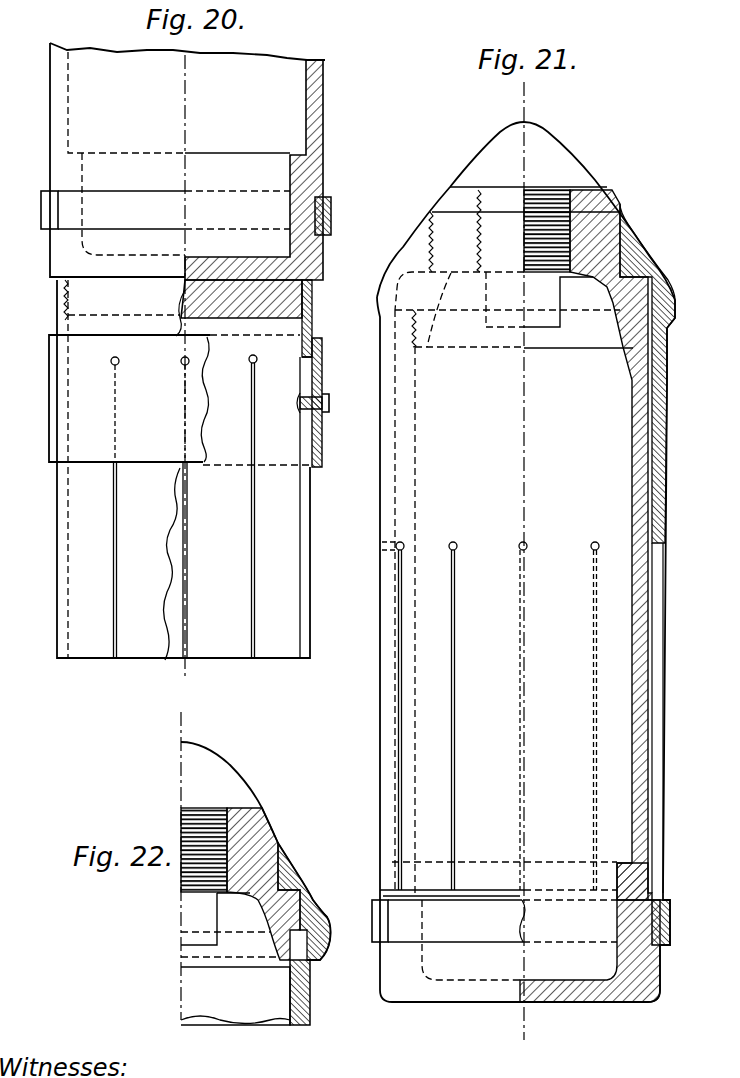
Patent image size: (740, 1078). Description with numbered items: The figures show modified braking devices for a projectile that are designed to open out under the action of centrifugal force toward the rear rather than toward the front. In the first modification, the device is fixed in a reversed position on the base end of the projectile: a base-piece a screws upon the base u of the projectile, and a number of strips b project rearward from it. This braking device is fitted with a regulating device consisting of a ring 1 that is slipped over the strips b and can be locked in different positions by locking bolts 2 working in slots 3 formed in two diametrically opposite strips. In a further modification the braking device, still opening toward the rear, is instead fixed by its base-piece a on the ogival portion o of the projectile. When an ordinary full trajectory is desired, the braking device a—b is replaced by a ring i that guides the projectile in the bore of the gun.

In FIG. 20, the base-piece a is at (82, 295).
In FIG. 21, the base-piece a is at (633, 262).
In FIG. 20, the base of the projectile u is at (323, 258).
In FIG. 21, the ogival portion o is at (612, 222).
In FIG. 22, the ogival portion o is at (256, 826).
In FIG. 22, the ring i is at (290, 878).
In FIG. 20, the strips b is at (133, 559).
In FIG. 21, the strips b is at (383, 715).
In FIG. 20, the ring 1 is at (77, 418).
In FIG. 20, the locking bolts 2 is at (300, 400).
In FIG. 20, the slots 3 is at (305, 453).